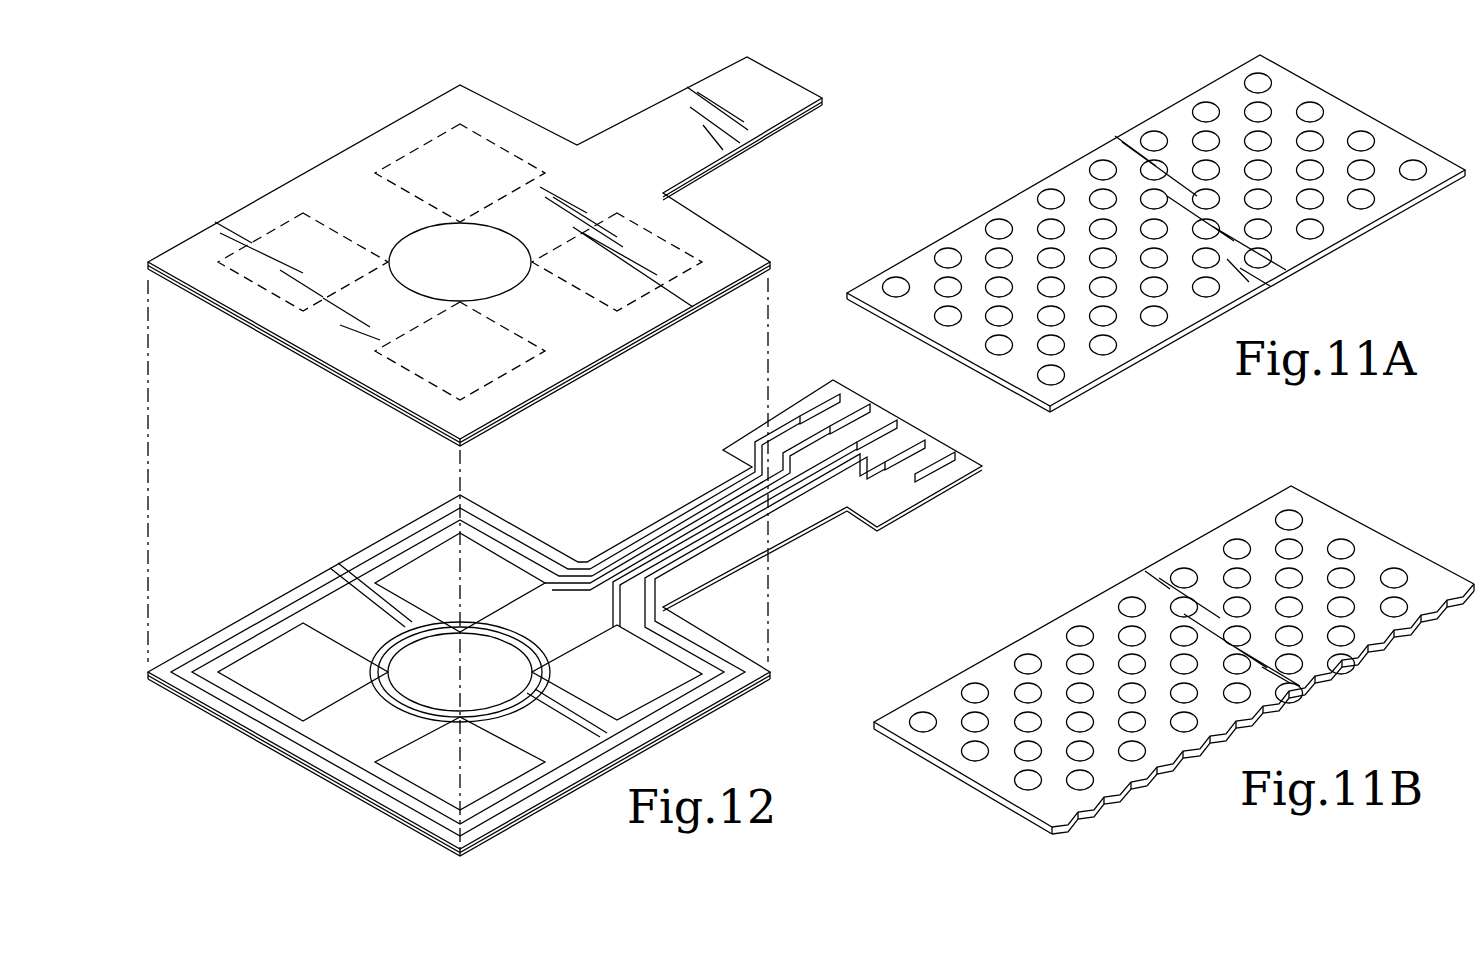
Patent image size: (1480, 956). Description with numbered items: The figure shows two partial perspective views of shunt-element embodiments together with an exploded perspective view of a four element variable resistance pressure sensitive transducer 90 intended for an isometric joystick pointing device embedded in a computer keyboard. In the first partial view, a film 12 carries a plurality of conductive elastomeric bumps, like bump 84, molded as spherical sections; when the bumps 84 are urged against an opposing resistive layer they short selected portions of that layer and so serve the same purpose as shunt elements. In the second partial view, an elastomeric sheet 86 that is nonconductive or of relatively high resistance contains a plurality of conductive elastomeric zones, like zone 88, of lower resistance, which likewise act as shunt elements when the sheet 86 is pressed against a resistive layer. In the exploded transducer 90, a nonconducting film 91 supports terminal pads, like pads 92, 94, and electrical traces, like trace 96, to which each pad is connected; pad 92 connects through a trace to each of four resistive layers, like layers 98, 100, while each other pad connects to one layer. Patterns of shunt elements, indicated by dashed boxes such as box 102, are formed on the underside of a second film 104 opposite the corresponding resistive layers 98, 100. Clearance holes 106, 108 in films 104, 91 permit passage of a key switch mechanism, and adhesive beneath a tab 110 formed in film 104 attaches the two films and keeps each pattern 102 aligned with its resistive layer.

In FIG. 11A, the film 12 is at (1076, 186).
In FIG. 11A, the conductive elastomeric bump 84 is at (1206, 108).
In FIG. 11B, the elastomeric sheet 86 is at (1109, 614).
In FIG. 11B, the conductive elastomeric zone 88 is at (1183, 573).
In FIG. 12, the four element variable resistance pressure sensitive transducer 90 is at (573, 126).
In FIG. 12, the nonconducting film 91 is at (793, 407).
In FIG. 12, the terminal pad 92 is at (900, 430).
In FIG. 12, the terminal pad 94 is at (963, 455).
In FIG. 12, the electrical trace 96 is at (798, 513).
In FIG. 12, the resistive layer 98 is at (660, 678).
In FIG. 12, the resistive layer 100 is at (285, 650).
In FIG. 12, the pattern of shunt elements 102 is at (441, 146).
In FIG. 12, the second film 104 is at (262, 222).
In FIG. 12, the clearance hole 106 is at (520, 240).
In FIG. 12, the clearance hole 108 is at (426, 637).
In FIG. 12, the tab 110 is at (783, 92).